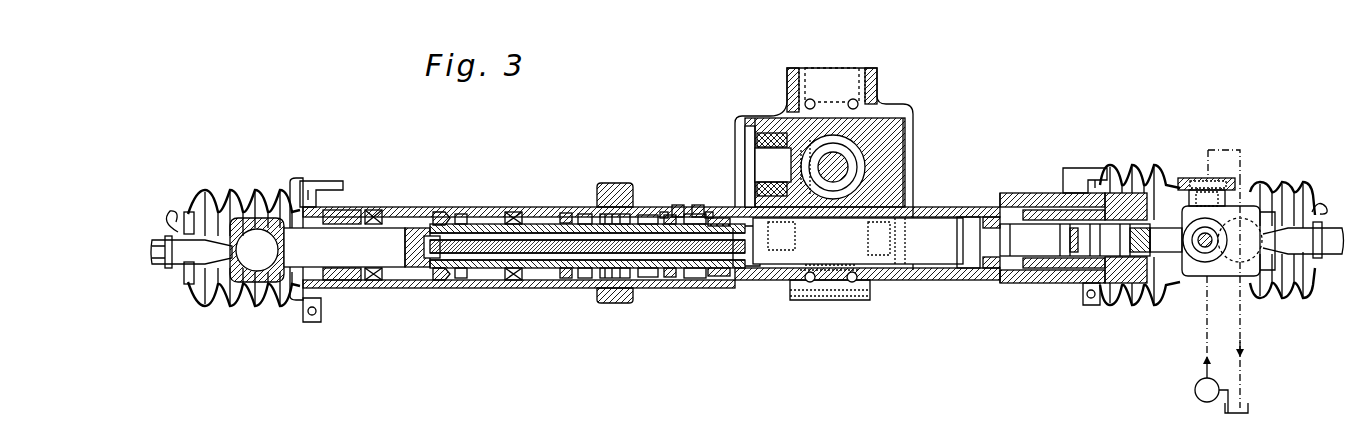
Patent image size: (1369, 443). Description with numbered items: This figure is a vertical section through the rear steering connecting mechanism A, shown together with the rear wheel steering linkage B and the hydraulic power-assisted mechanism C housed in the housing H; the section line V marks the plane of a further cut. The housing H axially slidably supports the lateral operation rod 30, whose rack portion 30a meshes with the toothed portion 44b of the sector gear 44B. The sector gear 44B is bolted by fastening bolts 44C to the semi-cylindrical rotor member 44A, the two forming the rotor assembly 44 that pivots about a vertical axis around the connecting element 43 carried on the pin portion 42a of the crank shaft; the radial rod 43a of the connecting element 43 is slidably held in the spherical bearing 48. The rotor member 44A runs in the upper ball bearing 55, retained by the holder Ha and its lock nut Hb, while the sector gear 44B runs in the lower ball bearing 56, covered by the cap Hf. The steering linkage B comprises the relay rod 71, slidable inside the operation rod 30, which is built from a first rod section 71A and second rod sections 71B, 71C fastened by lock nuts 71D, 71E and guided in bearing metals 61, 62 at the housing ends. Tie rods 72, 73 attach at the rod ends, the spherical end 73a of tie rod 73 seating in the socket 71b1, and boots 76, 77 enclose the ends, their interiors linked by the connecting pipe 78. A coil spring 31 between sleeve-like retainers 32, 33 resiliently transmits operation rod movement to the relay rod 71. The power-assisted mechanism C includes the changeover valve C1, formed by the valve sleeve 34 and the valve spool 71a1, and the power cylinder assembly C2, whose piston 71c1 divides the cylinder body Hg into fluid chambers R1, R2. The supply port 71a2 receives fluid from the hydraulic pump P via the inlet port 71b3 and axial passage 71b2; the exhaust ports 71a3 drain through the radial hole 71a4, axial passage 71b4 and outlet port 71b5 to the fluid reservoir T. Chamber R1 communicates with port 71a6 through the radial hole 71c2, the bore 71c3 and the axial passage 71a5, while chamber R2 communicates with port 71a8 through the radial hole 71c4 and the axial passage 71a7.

The lateral operation rod 30 is at (963, 197).
The rack portion 30a is at (880, 232).
The coil spring 31 is at (660, 268).
The sleeve-like retainer 32 is at (680, 264).
The sleeve-like retainer 33 is at (632, 276).
The valve sleeve 34 is at (731, 270).
The pin portion of crank shaft 42a is at (843, 196).
The connecting element 43 is at (861, 160).
The radial rod 43a is at (758, 160).
The rotor assembly 44 is at (903, 160).
The semi-cylindrical rotor member 44A is at (893, 128).
The sector gear 44B is at (903, 202).
The fastening bolts 44C is at (790, 247).
The toothed portion 44b is at (880, 282).
The spherical bearing 48 is at (737, 129).
The ball bearing 55 is at (804, 104).
The ball bearing 56 is at (805, 300).
The bearing metal 61 is at (1124, 287).
The bearing metal 62 is at (343, 289).
The relay rod 71 is at (752, 244).
The first rod section 71A is at (989, 252).
The second rod section 71B is at (1042, 210).
The second rod section 71C is at (512, 222).
The lock nut 71D is at (1020, 258).
The lock nut 71E is at (573, 278).
The valve spool 71a1 is at (674, 210).
The supply port 71a2 is at (713, 280).
The exhaust ports 71a3 is at (715, 199).
The radial hole 71a4 is at (1090, 238).
The axial passage 71a5 is at (540, 252).
The port 71a6 is at (700, 270).
The axial passage 71a7 is at (553, 242).
The port 71a8 is at (698, 207).
The socket 71b1 is at (1267, 206).
The axial passage 71b2 is at (1163, 255).
The inlet port 71b3 is at (1207, 247).
The axial passage 71b4 is at (1170, 208).
The outlet port 71b5 is at (1202, 176).
The piston 71c1 is at (430, 216).
The radial hole 71c2 is at (434, 222).
The bore 71c3 is at (420, 246).
The radial hole 71c4 is at (462, 222).
The tie rod 72 is at (193, 246).
The tie rod 73 is at (1332, 254).
The spherical end 73a is at (1249, 260).
The boot 76 is at (272, 306).
The boot 77 is at (1292, 190).
The connecting pipe 78 is at (333, 181).
The connecting mechanism A is at (909, 102).
The rear wheel steering linkage B is at (1008, 220).
The hydraulic power-assisted mechanism C is at (591, 189).
The changeover valve C1 is at (714, 300).
The hydraulic power cylinder assembly C2 is at (444, 206).
The housing H is at (751, 118).
The holder Ha is at (857, 64).
The lock nut Hb is at (876, 70).
The cap Hf is at (847, 303).
The cylinder body Hg is at (424, 289).
The hydraulic pump P is at (1200, 399).
The fluid chamber R1 is at (395, 289).
The fluid chamber R2 is at (471, 289).
The fluid reservoir T is at (1248, 404).
The section line V- V is at (831, 50).